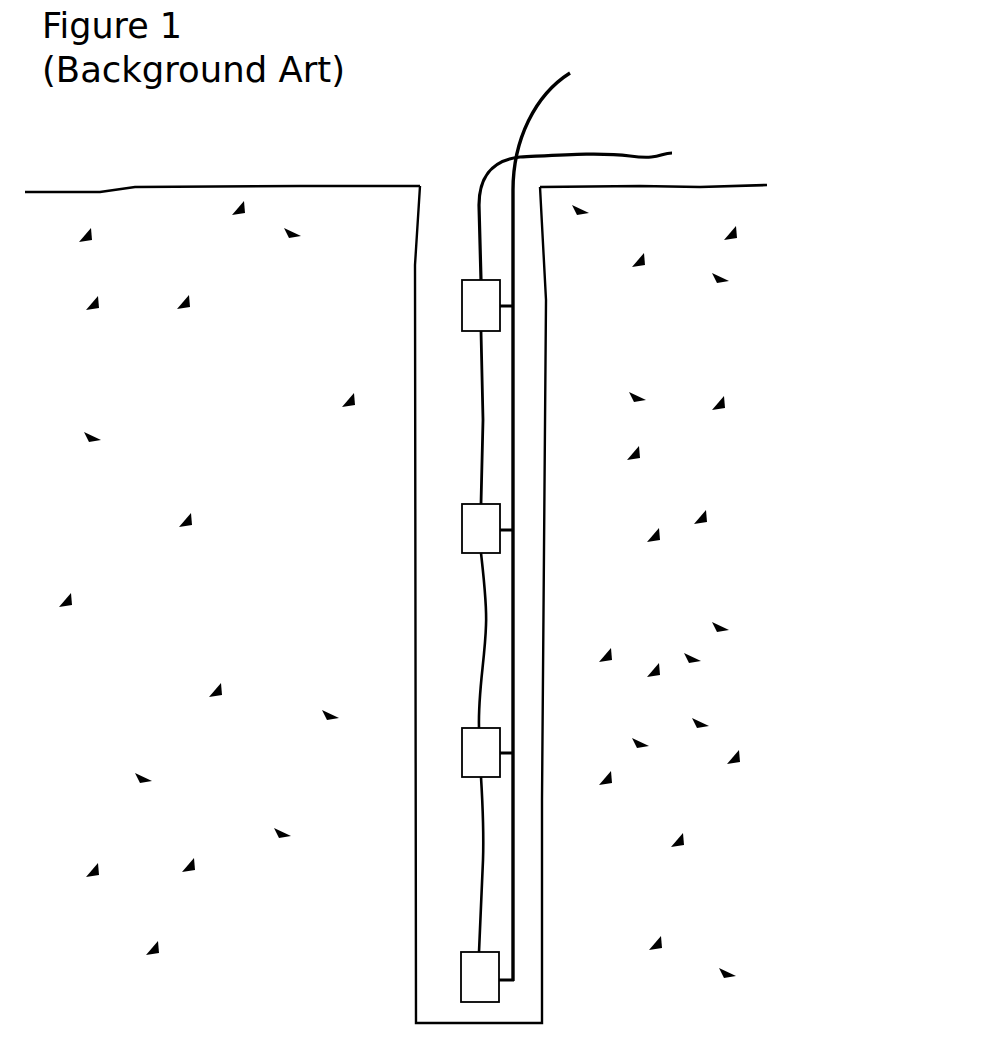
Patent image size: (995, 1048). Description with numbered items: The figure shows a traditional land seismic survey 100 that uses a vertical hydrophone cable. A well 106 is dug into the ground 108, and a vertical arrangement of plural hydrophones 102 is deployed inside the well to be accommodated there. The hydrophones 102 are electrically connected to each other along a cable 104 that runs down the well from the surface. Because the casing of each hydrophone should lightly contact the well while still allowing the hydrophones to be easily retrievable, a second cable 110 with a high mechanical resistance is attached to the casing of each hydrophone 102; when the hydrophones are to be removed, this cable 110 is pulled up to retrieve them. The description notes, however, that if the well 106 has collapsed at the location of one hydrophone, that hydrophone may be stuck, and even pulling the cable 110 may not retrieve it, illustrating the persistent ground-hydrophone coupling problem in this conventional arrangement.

The land seismic survey 100 is at (496, 103).
The hydrophones 102 is at (488, 758).
The cable 104 is at (485, 623).
The well 106 is at (440, 204).
The ground 108 is at (703, 202).
The cable with high mechanical resistance 110 is at (513, 242).